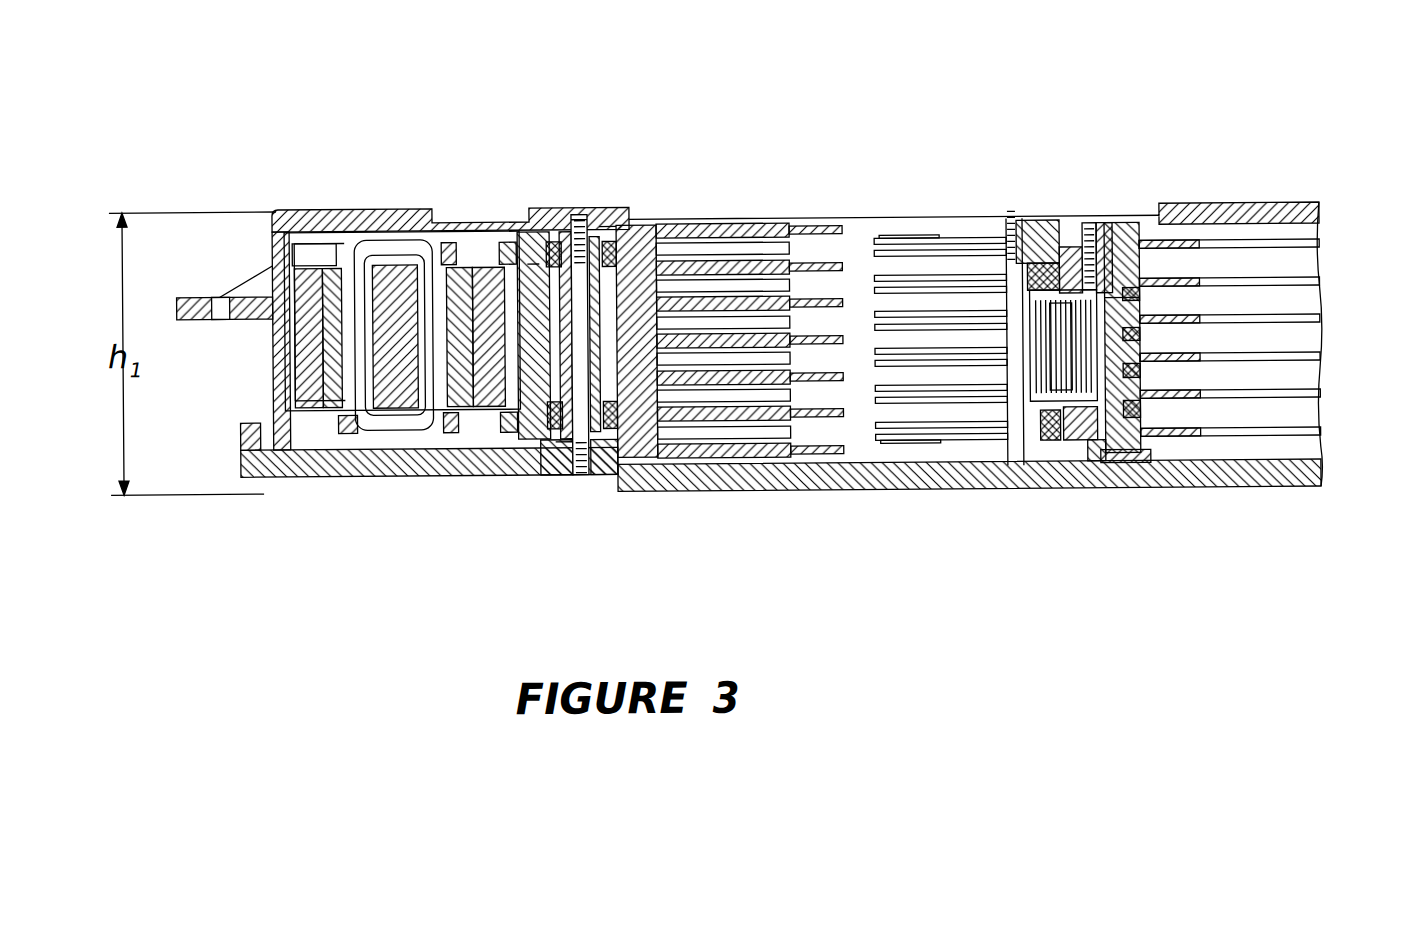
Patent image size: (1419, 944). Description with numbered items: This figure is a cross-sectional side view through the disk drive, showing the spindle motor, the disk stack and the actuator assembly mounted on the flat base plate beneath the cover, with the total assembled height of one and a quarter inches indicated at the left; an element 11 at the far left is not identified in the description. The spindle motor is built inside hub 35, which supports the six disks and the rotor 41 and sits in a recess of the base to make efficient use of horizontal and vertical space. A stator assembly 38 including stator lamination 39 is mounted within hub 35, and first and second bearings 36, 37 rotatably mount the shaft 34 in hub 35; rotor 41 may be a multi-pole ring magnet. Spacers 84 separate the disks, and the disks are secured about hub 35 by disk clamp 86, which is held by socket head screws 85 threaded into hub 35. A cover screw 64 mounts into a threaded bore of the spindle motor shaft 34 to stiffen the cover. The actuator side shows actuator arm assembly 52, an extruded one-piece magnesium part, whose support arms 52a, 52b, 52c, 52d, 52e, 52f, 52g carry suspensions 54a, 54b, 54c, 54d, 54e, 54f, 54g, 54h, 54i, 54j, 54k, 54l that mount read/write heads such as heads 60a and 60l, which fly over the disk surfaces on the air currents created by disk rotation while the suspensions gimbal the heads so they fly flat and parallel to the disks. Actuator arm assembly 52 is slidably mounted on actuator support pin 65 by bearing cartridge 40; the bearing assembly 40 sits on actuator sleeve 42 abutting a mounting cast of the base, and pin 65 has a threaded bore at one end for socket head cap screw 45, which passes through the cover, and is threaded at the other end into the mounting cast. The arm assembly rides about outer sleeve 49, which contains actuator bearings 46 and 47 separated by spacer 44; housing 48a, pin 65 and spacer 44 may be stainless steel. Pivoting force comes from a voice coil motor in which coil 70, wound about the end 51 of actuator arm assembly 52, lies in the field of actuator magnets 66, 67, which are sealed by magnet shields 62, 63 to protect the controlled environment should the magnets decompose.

The mounting flange 11 is at (196, 296).
The spindle motor shaft 34 is at (1092, 372).
The hub 35 is at (1122, 462).
The first bearing 36 is at (1045, 268).
The second bearing 37 is at (1050, 447).
The stator assembly 38 is at (1092, 347).
The stator lamination 39 is at (1110, 295).
The bearing cartridge 40 is at (577, 467).
The rotor 41 is at (1122, 310).
The actuator sleeve 42 is at (540, 268).
The spacer 44 is at (528, 397).
The socket head cap screw 45 is at (580, 218).
The actuator bearing 46 is at (612, 222).
The actuator bearing 47 is at (537, 462).
The housing 48a is at (458, 232).
The outer sleeve 49 is at (527, 260).
The end of actuator arm assembly 51 is at (358, 240).
The actuator arm assembly 52 is at (648, 228).
The support arm 52a is at (745, 236).
The support arm 52b is at (716, 272).
The support arm 52c is at (700, 298).
The support arm 52d is at (683, 347).
The support arm 52e is at (720, 384).
The support arm 52f is at (745, 420).
The support arm 52g is at (765, 457).
The suspension 54a is at (945, 239).
The suspension 54b is at (932, 251).
The suspension 54c is at (915, 276).
The suspension 54d is at (900, 312).
The suspension 54e is at (885, 325).
The suspension 54f is at (860, 349).
The suspension 54g is at (858, 361).
The suspension 54h is at (872, 386).
The suspension 54i is at (885, 398).
The suspension 54j is at (898, 423).
The suspension 54k is at (910, 435).
The suspension 54l is at (920, 441).
The read/write head 60a is at (985, 236).
The read/write head 60l is at (983, 462).
The magnet shield 62 is at (360, 437).
The magnet shield 63 is at (433, 410).
The cover screw 64 is at (1010, 208).
The actuator support pin 65 is at (557, 442).
The actuator magnet 66 is at (333, 395).
The actuator magnet 67 is at (468, 397).
The coil 70 is at (388, 245).
The spacer 84 is at (1137, 292).
The socket head screw 85 is at (1082, 225).
The disk clamp 86 is at (1112, 310).